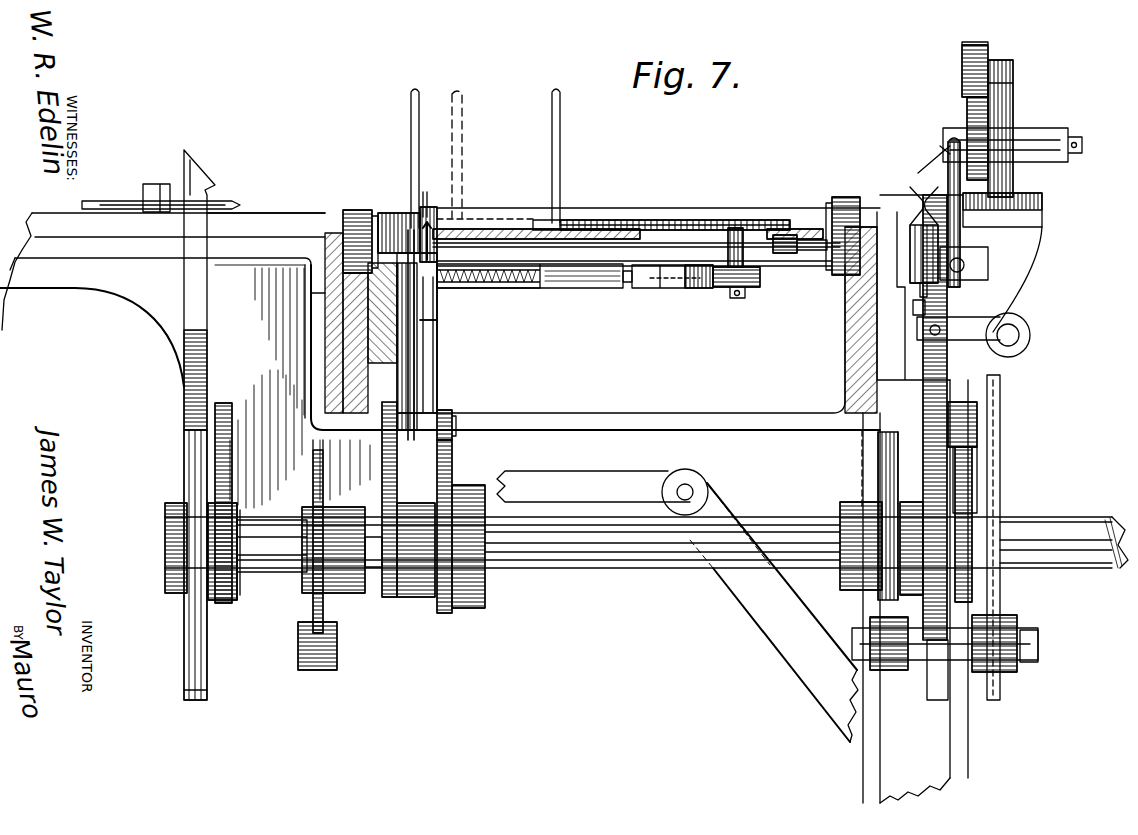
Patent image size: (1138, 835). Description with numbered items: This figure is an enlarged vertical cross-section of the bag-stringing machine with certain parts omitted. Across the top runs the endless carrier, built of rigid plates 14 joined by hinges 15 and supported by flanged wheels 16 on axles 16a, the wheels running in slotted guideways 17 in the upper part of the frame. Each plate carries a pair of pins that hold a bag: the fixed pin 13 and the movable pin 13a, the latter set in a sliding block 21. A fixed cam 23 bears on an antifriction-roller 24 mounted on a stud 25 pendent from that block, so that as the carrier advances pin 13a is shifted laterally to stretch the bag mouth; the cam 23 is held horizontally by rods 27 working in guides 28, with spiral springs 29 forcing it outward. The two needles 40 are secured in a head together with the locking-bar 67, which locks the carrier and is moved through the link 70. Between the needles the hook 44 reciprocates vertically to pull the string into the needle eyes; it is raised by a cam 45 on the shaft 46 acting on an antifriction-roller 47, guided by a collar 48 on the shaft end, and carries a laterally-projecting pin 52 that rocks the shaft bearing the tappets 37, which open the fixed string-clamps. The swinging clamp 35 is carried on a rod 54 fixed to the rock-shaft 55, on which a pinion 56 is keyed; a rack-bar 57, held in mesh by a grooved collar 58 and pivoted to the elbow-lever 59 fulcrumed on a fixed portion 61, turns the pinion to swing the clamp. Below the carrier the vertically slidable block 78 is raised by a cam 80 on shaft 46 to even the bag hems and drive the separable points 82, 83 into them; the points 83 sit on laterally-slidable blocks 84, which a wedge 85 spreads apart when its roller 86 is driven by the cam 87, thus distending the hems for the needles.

The pin 13 is at (399, 158).
The movable pin 13a is at (560, 128).
The carrier plate 14 is at (380, 302).
The hinge 15 is at (390, 240).
The flanged wheel 16 is at (362, 228).
The axle 16a is at (782, 255).
The slotted guideway 17 is at (840, 280).
The sliding block 21 is at (585, 228).
The fixed cam 23 is at (670, 288).
The antifriction-roller 24 is at (750, 287).
The stud 25 is at (728, 245).
The rod 27 is at (628, 286).
The guide 28 is at (530, 288).
The spiral spring 29 is at (488, 300).
The swinging clamp 35 is at (915, 236).
The tappet 37 is at (973, 324).
The needle 40 is at (161, 196).
The hook 44 is at (927, 678).
The cam 45 is at (232, 503).
The shaft 46 is at (345, 503).
The antifriction-roller 47 is at (228, 410).
The collar 48 is at (170, 594).
The laterally-projecting pin 52 is at (942, 334).
The rod 54 is at (948, 142).
The rock-shaft 55 is at (1050, 128).
The pinion 56 is at (967, 118).
The rack-bar 57 is at (994, 103).
The grooved collar 58 is at (962, 64).
The elbow-lever 59 is at (998, 470).
The fixed portion 61 is at (318, 502).
The locking-bar 67 is at (325, 222).
The link 70 is at (677, 605).
The vertically slidable block 78 is at (418, 344).
The cam 80 is at (397, 490).
The fixed point 82 is at (428, 205).
The movable point 83 is at (440, 230).
The laterally-slidable block 84 is at (435, 322).
The wedge 85 is at (437, 388).
The antifriction-roller 86 is at (453, 437).
The cam 87 is at (452, 490).